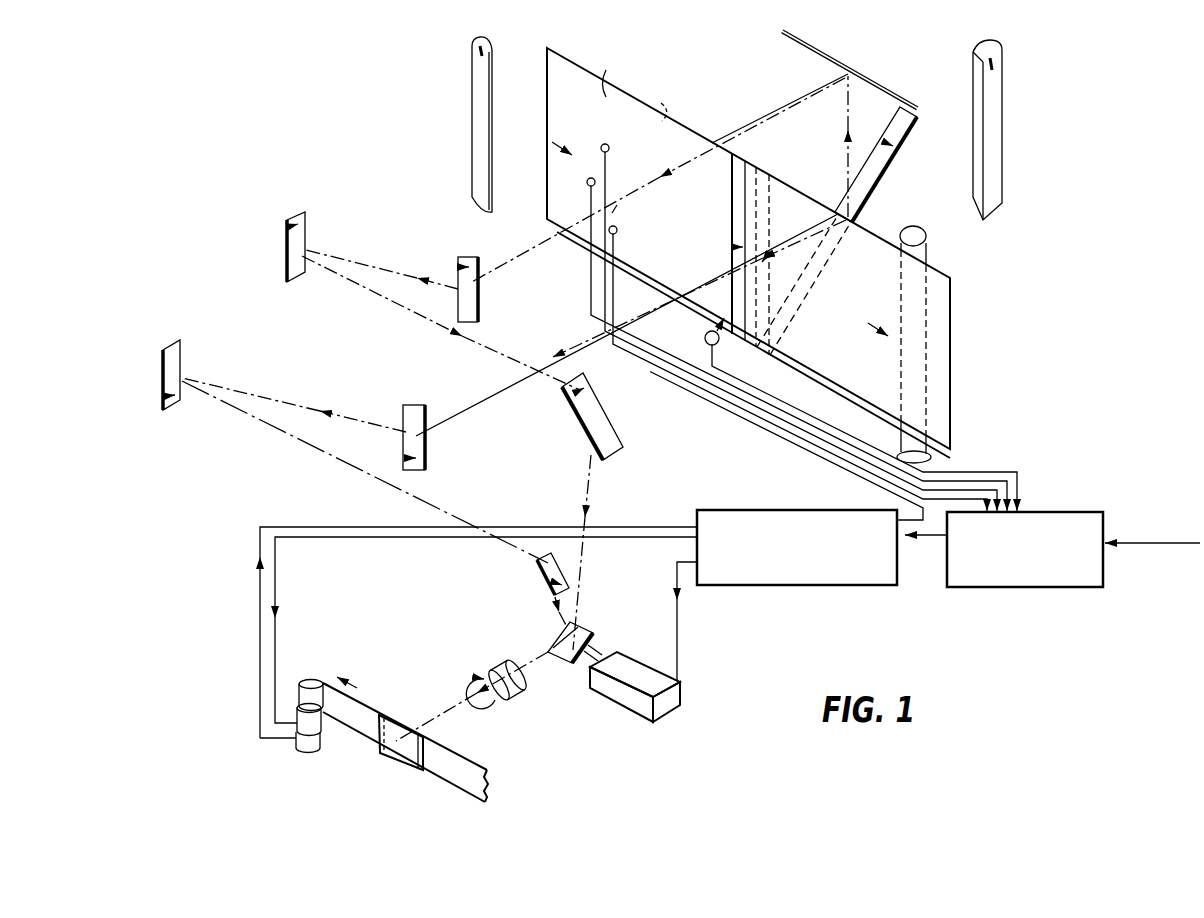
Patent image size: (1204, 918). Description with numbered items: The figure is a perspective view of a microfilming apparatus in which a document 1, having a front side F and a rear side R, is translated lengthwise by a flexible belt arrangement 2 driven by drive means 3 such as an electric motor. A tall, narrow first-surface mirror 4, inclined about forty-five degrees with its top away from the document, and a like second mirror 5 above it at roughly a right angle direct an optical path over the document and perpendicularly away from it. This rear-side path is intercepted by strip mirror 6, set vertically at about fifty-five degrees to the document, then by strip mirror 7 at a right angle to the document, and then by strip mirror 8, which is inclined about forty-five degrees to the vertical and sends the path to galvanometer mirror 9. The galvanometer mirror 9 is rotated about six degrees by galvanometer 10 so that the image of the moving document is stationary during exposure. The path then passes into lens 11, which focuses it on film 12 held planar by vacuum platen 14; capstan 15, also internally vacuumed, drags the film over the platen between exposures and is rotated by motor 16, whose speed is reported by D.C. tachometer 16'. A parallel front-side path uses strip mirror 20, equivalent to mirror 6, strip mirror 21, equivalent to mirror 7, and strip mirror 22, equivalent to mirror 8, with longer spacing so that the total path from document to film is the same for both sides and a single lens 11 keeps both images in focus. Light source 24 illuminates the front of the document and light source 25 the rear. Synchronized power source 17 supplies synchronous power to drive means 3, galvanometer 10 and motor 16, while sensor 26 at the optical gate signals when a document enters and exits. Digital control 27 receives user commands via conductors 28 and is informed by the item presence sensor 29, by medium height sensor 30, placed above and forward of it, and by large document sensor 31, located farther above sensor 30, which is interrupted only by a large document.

The document 1 is at (844, 354).
The flexible belt arrangement 2 is at (880, 409).
The drive means 3 is at (927, 237).
The first-surface mirror 4 is at (888, 163).
The second mirror 5 is at (884, 83).
The strip mirror 6 is at (473, 259).
The strip mirror 7 is at (305, 228).
The strip mirror 8 is at (589, 386).
The galvanometer mirror 9 is at (586, 631).
The galvanometer 10 is at (666, 708).
The lens 11 is at (505, 660).
The film 12 is at (465, 766).
The vacuum platen 14 is at (403, 750).
The capstan 15 is at (303, 681).
The motor 16 is at (486, 645).
The D.C. tachometer 16' is at (478, 652).
The synchronized power source 17 is at (880, 585).
The strip mirror 20 is at (437, 404).
The strip mirror 21 is at (182, 356).
The strip mirror 22 is at (546, 580).
The light source 24 is at (473, 121).
The light source 25 is at (1002, 130).
The sensor 26 is at (705, 338).
The digital control 27 is at (1096, 587).
The conductors 28 is at (1120, 541).
The IPL sensor 29 is at (798, 366).
The medium height sensor 30 is at (779, 339).
The large document sensor 31 is at (799, 316).